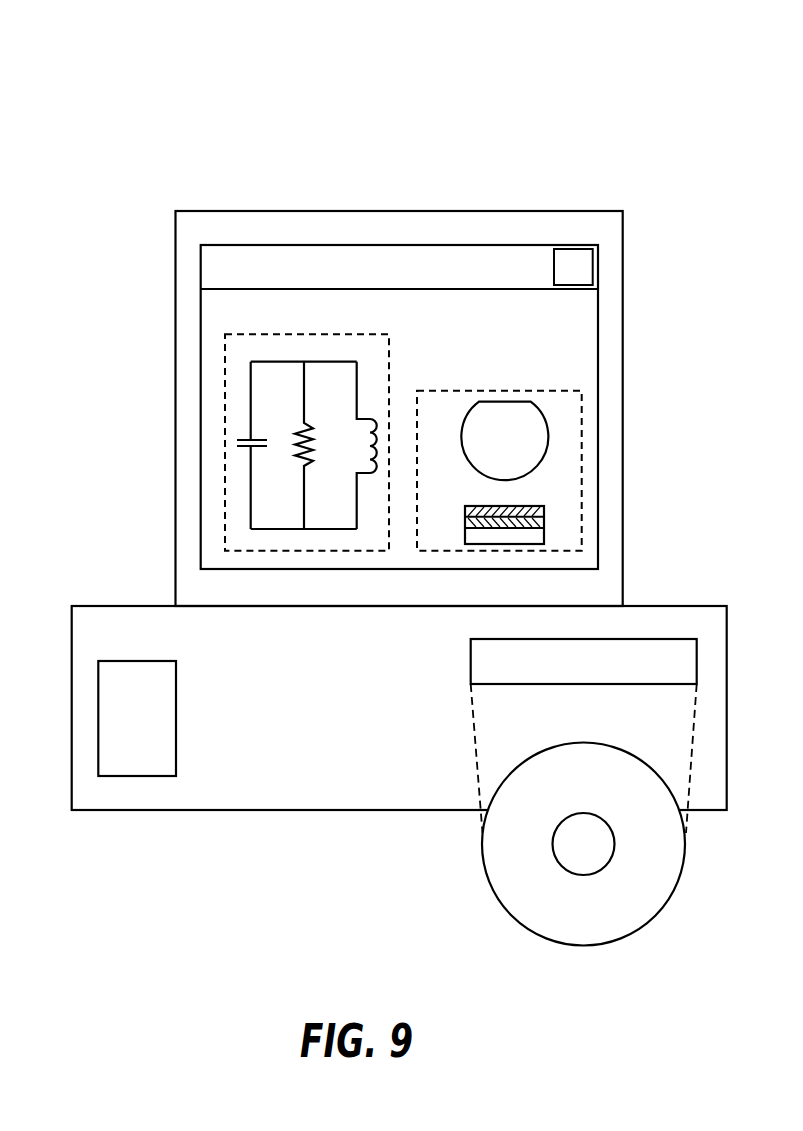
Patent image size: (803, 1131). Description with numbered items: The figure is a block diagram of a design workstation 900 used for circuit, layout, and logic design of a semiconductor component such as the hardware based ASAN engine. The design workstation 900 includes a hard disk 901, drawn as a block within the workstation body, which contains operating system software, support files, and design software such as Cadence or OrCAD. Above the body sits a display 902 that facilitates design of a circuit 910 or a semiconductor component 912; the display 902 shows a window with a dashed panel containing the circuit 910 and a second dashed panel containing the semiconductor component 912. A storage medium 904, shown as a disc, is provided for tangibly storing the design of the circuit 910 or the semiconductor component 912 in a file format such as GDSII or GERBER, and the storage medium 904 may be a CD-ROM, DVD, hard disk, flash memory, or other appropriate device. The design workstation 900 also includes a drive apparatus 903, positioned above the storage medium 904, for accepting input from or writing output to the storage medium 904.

The design workstation 900 is at (84, 94).
The hard disk 901 is at (176, 722).
The display 902 is at (413, 211).
The drive apparatus 903 is at (663, 639).
The storage medium 904 is at (653, 918).
The circuit 910 is at (390, 366).
The semiconductor component 912 is at (510, 390).